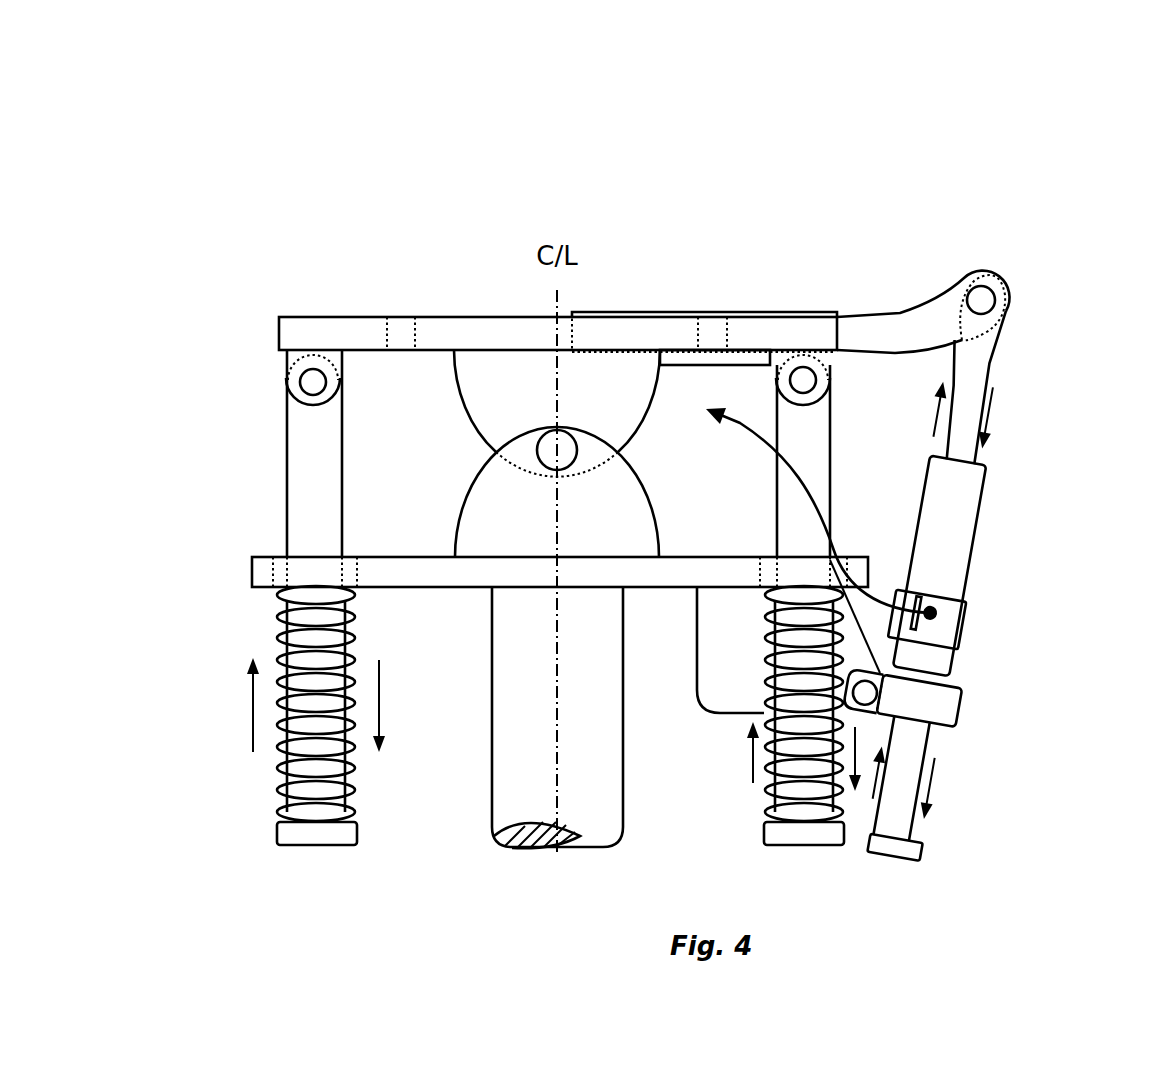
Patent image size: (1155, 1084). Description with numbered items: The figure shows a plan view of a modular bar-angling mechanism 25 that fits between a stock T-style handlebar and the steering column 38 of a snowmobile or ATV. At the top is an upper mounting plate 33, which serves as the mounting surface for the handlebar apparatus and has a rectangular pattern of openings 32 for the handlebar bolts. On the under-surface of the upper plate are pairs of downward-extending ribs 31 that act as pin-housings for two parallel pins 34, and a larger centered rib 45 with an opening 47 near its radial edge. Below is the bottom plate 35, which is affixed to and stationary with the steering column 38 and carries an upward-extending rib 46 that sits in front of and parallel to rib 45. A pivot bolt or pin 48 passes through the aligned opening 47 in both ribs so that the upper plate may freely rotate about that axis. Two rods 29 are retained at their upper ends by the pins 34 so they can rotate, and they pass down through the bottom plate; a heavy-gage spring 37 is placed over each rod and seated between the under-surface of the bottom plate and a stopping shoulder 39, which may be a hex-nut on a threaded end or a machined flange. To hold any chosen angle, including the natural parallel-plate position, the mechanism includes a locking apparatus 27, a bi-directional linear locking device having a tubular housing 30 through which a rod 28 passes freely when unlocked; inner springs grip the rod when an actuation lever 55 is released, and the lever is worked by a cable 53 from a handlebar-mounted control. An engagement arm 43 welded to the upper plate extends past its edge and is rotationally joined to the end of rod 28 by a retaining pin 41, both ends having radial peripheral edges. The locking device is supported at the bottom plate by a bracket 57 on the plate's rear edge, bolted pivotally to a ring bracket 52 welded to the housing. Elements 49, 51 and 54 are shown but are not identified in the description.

The bar-angling mechanism 25 is at (674, 210).
The locking apparatus 27 is at (1040, 500).
The rod 28 is at (988, 385).
The rods 29 is at (288, 518).
The tubular housing 30 is at (918, 510).
The ribs 31 is at (280, 368).
The openings 32 is at (713, 318).
The upper mounting plate 33 is at (357, 317).
The pins 34 is at (313, 382).
The bottom plate 35 is at (252, 572).
The spring 37 is at (285, 812).
The steering column 38 is at (484, 688).
The stopping shoulder 39 is at (805, 845).
The retaining pin 41 is at (1012, 297).
The engagement arm 43 is at (787, 312).
The rib 45 is at (477, 432).
The rib 46 is at (453, 533).
The opening 47 is at (502, 447).
The pivot bolt or pin 48 is at (563, 443).
The collar pin 49 is at (963, 622).
The damper cylinder 51 is at (1008, 572).
The ring bracket 52 is at (963, 707).
The cable 53 is at (810, 498).
The end cap 54 is at (880, 858).
The actuation lever 55 is at (897, 592).
The bracket 57 is at (697, 670).